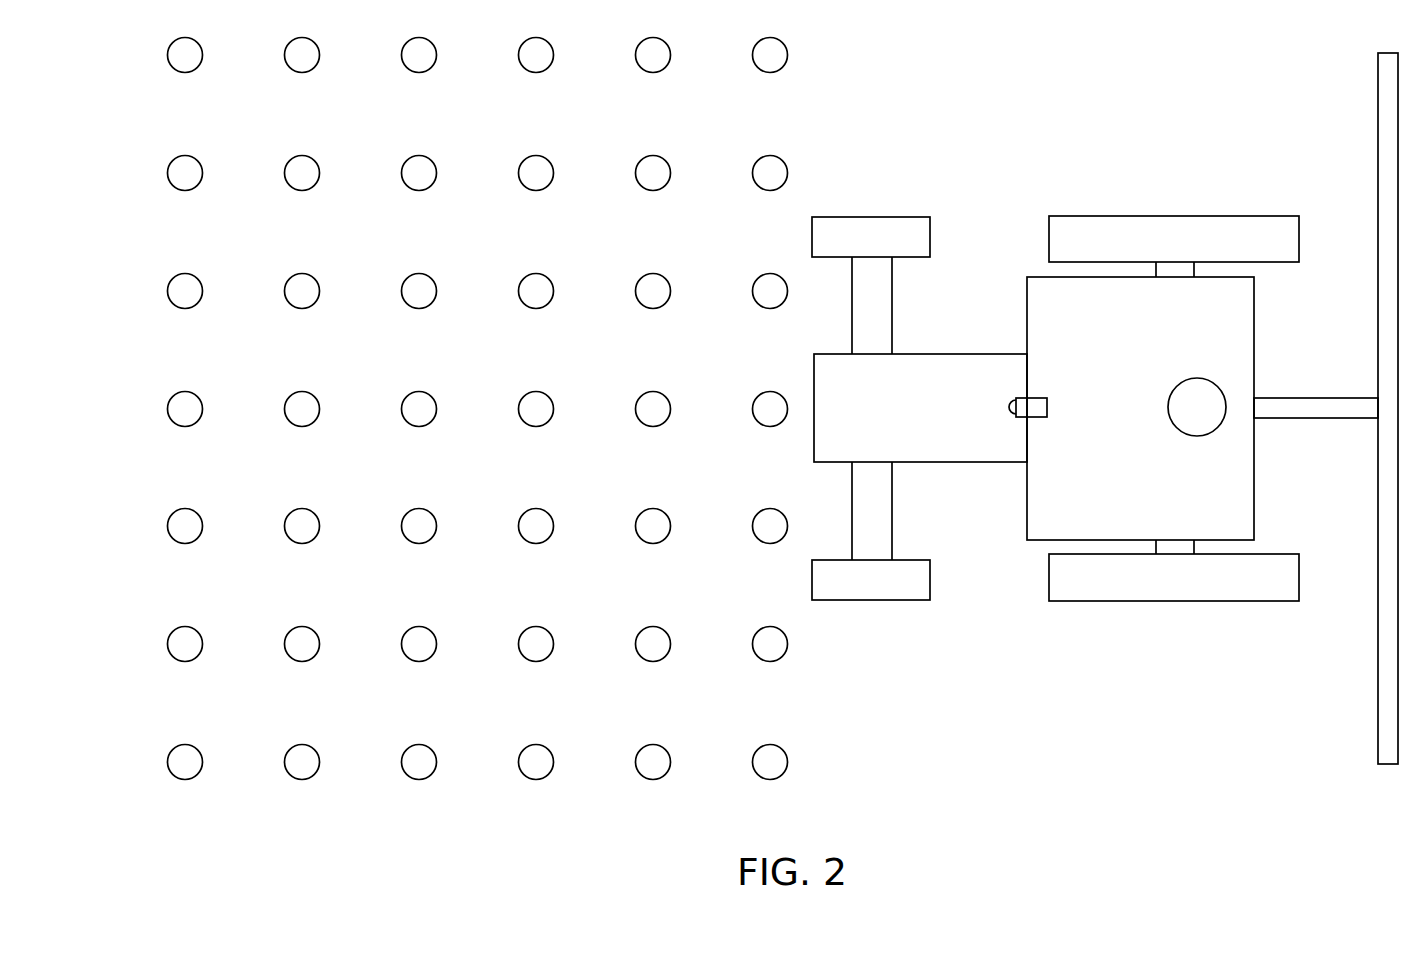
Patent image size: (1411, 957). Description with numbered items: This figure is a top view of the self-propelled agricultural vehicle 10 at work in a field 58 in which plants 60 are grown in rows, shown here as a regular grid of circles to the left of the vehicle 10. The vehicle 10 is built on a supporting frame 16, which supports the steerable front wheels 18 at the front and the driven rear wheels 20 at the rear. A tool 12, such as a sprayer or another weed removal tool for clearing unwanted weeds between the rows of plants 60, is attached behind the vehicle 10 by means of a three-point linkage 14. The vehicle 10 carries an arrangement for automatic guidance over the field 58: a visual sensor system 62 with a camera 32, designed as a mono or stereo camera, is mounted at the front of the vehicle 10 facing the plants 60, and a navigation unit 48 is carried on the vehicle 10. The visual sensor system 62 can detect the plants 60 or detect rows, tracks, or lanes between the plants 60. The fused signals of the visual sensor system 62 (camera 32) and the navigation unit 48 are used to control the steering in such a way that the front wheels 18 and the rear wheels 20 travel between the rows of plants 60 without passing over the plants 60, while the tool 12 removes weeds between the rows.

The self-propelled agricultural vehicle 10 is at (1101, 634).
The tool 12 is at (1390, 163).
The three-point linkage 14 is at (1312, 405).
The supporting frame 16 is at (968, 463).
The steerable front wheels 18 is at (907, 577).
The driven rear wheels 20 is at (1269, 575).
The camera 32 is at (1011, 404).
The visual sensor system 62 is at (1028, 407).
The navigation unit 48 is at (1188, 398).
The field 58 is at (137, 368).
The plants 60 is at (183, 282).